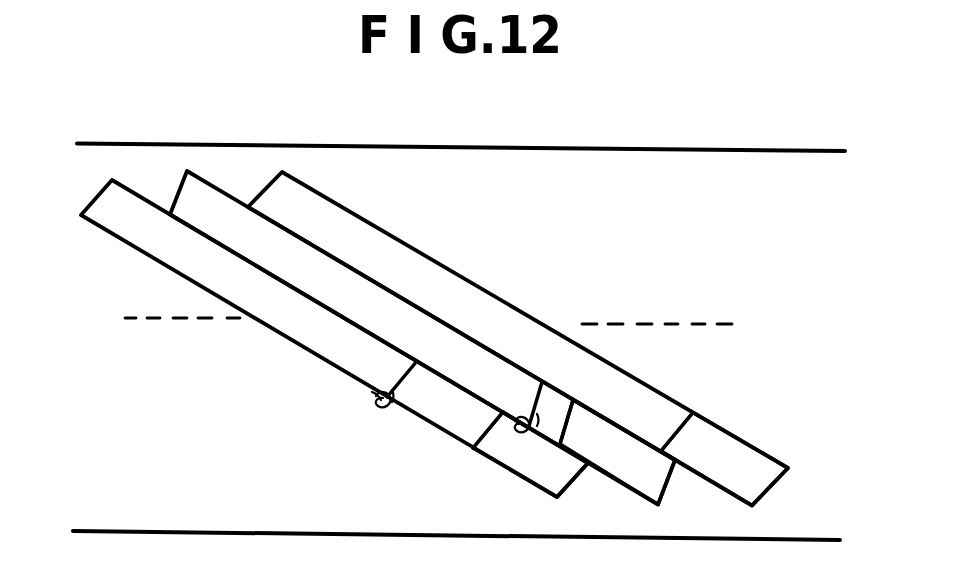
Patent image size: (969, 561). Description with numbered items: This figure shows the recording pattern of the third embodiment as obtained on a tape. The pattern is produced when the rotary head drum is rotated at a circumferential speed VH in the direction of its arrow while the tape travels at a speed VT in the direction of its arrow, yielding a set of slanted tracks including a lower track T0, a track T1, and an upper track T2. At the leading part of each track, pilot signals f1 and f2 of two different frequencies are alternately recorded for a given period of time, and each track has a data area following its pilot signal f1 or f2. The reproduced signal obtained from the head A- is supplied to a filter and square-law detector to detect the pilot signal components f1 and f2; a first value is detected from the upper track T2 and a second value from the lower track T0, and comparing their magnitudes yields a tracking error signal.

The lower track T0 is at (328, 330).
The track T1 is at (414, 329).
The upper track T2 is at (513, 328).
The pilot signal f1 is at (617, 452).
The pilot signal f2 is at (630, 459).
The head A- is at (529, 443).
The tape travel speed VT is at (606, 122).
The circumferential speed of rotary head drum VH is at (472, 258).